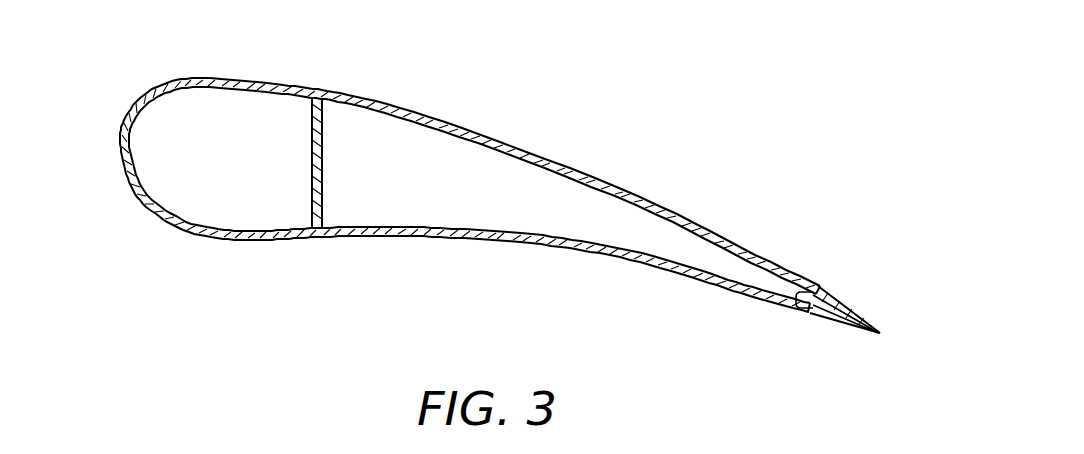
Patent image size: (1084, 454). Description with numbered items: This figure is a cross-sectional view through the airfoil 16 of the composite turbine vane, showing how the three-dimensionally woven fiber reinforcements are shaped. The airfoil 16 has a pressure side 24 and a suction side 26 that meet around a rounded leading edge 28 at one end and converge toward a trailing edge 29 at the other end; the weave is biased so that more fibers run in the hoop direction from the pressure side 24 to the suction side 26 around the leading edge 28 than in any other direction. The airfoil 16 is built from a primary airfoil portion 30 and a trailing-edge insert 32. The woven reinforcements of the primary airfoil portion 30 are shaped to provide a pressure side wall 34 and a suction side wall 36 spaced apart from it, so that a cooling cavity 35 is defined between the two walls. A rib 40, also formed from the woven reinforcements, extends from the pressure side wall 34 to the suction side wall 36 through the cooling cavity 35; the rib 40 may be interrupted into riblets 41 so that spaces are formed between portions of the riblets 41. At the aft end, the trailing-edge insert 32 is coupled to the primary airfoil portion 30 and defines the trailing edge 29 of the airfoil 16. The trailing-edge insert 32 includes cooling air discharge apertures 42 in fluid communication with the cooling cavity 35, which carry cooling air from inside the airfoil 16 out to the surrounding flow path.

The airfoil 16 is at (499, 204).
The pressure side 24 is at (432, 171).
The suction side 26 is at (432, 171).
The leading edge 28 is at (120, 143).
The trailing edge 29 is at (875, 307).
The primary airfoil portion 30 is at (432, 171).
The trailing-edge insert 32 is at (840, 307).
The pressure side wall 34 is at (432, 171).
The cooling cavity 35 is at (362, 137).
The suction side wall 36 is at (432, 171).
The rib 40 is at (362, 163).
The riblets 41 is at (325, 145).
The cooling air discharge apertures 42 is at (837, 328).